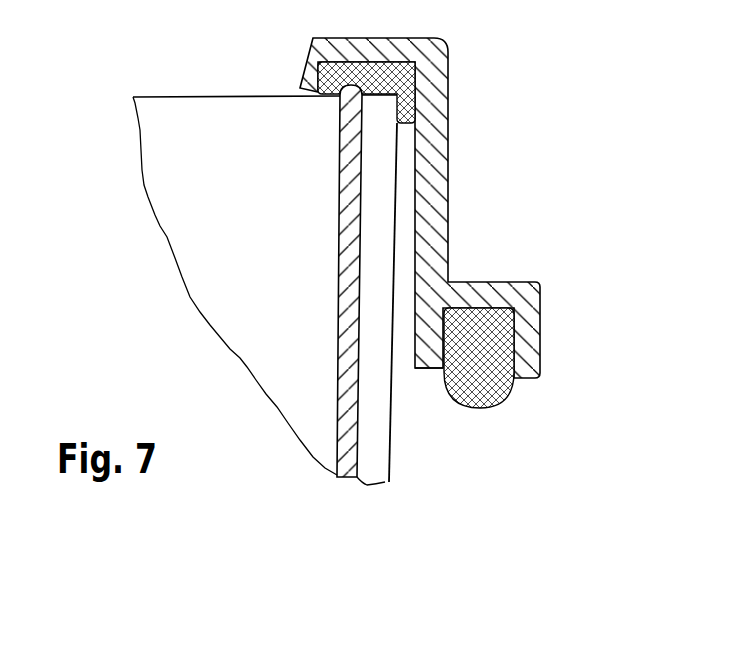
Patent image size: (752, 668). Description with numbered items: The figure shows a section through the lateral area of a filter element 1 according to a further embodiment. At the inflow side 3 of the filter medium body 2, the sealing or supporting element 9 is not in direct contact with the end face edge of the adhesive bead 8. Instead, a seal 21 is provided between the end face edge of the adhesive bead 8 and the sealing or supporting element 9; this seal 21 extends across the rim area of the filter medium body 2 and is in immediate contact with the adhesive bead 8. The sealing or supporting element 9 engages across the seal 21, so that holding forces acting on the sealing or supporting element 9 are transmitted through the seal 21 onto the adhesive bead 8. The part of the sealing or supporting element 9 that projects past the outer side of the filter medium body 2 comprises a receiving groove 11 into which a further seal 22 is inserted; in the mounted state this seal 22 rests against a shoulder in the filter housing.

The filter element 1 is at (160, 82).
The filter medium body 2 is at (160, 155).
The inflow side 3 is at (232, 95).
The adhesive bead 8 is at (346, 253).
The sealing or supporting element 9 is at (435, 162).
The receiving groove 11 is at (438, 380).
The seal 21 is at (393, 82).
The further seal 22 is at (487, 383).